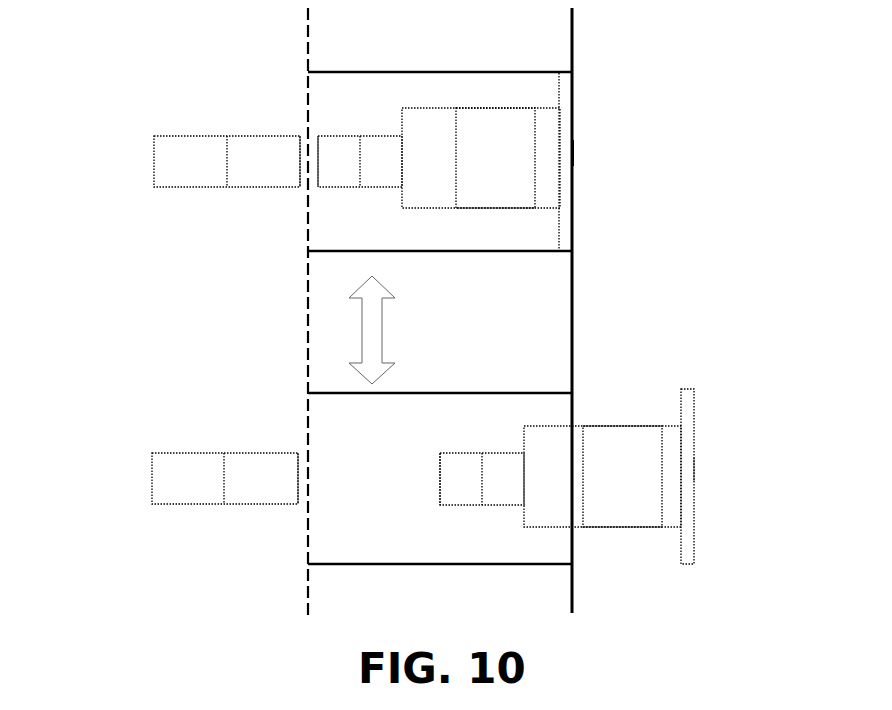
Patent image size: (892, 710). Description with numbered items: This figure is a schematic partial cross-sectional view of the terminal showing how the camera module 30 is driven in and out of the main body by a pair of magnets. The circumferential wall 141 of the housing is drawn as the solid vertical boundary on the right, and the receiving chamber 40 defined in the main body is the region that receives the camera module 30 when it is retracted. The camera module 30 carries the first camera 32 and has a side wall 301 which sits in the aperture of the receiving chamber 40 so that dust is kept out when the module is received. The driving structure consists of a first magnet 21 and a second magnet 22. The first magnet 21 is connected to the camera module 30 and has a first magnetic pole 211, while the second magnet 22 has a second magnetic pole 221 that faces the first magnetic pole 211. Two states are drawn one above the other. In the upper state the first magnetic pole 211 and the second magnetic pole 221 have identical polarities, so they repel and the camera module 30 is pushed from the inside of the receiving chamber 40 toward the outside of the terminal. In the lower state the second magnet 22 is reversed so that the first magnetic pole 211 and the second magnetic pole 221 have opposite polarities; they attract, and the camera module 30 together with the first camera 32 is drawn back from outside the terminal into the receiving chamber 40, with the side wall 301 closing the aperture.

The second magnet 22 is at (197, 146).
The second magnetic pole 221 is at (288, 140).
The first magnet 21 is at (350, 140).
The first magnetic pole 211 is at (325, 138).
The camera module 30 is at (428, 122).
The first camera 32 is at (483, 193).
The receiving chamber 40 is at (533, 88).
The side wall 301 is at (575, 153).
The circumferential wall 141 is at (575, 292).